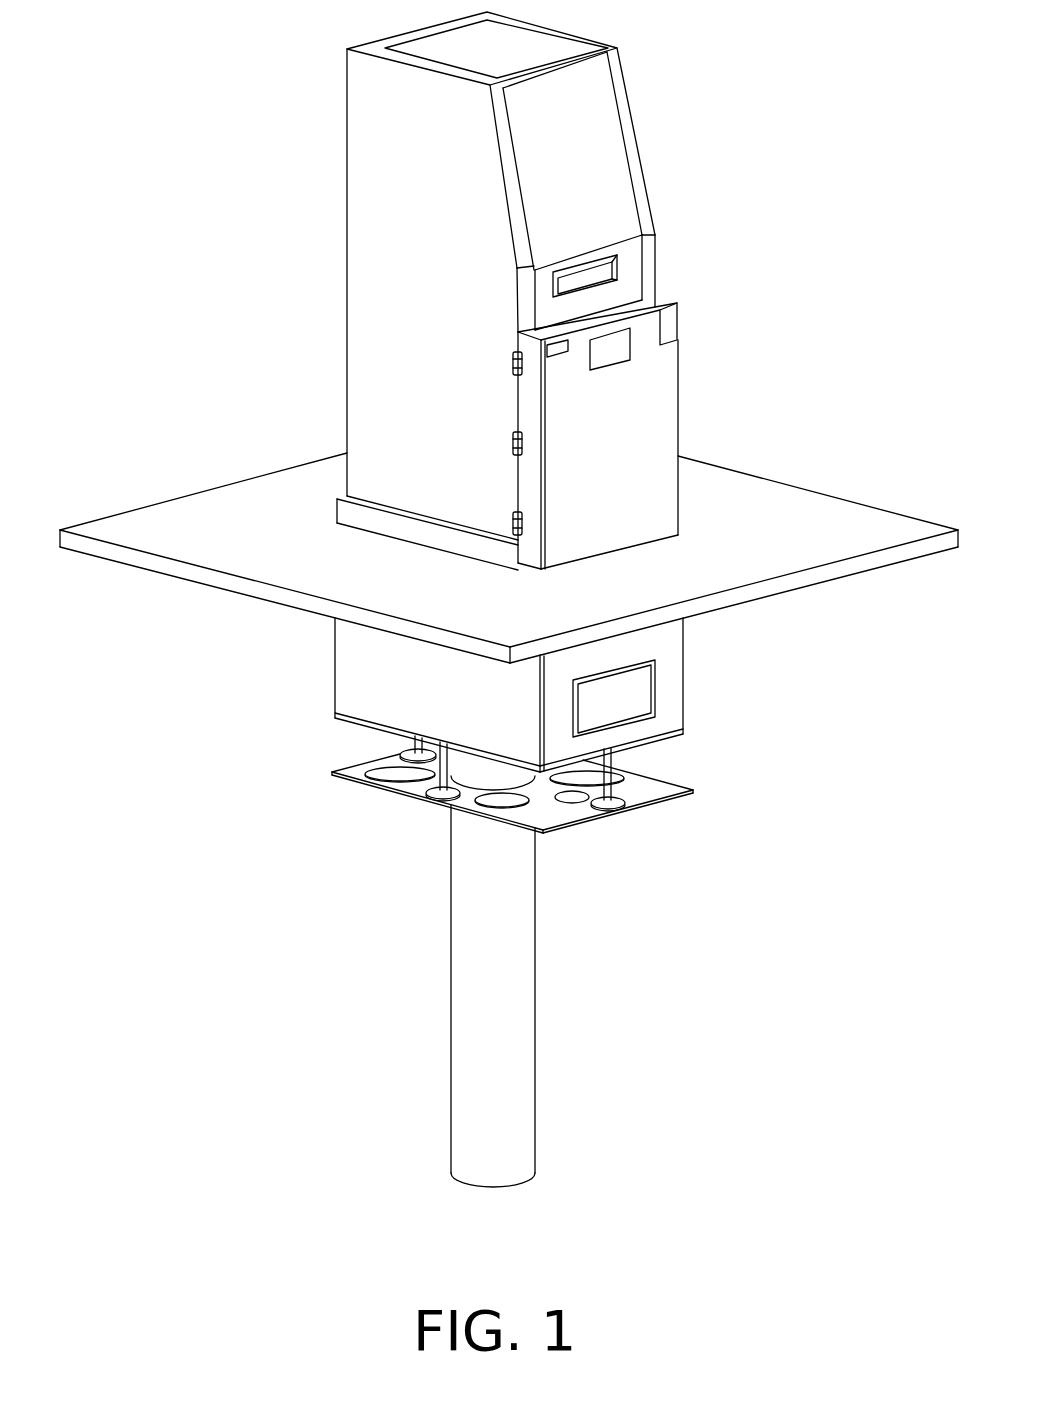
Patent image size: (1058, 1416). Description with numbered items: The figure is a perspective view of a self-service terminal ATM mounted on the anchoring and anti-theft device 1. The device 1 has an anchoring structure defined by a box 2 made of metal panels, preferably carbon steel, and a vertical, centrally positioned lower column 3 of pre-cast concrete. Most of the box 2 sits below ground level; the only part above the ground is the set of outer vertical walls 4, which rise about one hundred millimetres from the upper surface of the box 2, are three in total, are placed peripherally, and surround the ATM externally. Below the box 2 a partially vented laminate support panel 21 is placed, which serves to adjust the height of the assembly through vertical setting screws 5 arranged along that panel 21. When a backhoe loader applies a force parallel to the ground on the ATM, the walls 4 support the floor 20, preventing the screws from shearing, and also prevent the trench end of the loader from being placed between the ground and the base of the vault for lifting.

The self-service terminal ATM is at (380, 255).
The device for anchoring and protecting self-service terminals and vaults 1 is at (240, 793).
The box 2 is at (360, 652).
The lower column 3 is at (465, 1110).
The outer vertical walls 4 is at (330, 490).
The vertical setting screws 5 is at (418, 748).
The floor 20 is at (165, 527).
The laminate support panel 21 is at (382, 785).